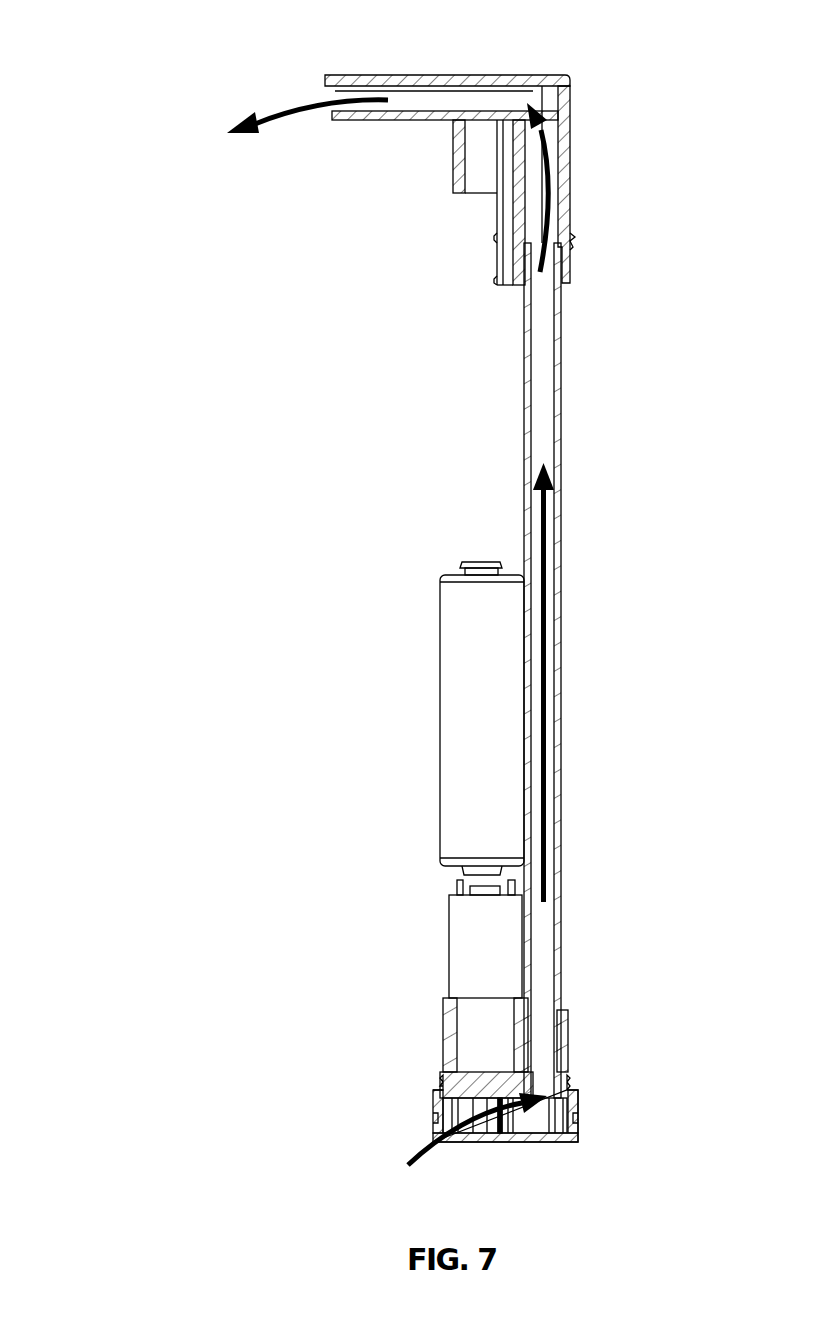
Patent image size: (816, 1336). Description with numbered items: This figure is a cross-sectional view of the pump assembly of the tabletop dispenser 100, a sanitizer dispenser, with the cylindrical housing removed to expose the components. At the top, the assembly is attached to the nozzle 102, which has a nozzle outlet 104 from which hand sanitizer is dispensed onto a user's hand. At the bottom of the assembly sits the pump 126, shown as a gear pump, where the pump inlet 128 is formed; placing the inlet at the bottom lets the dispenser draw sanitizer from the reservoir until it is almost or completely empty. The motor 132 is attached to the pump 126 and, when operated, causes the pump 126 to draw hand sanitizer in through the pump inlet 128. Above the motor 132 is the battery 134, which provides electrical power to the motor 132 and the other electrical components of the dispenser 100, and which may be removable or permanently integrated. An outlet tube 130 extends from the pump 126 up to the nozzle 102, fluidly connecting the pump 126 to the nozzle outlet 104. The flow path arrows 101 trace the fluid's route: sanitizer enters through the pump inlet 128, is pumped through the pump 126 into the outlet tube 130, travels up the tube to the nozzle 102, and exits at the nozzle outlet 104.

The tabletop dispenser 100 is at (104, 58).
The flow path arrows 101 is at (548, 155).
The nozzle 102 is at (475, 80).
The nozzle outlet 104 is at (316, 93).
The pump 126 is at (596, 1083).
The pump inlet 128 is at (414, 1136).
The outlet tube 130 is at (563, 510).
The motor 132 is at (467, 933).
The battery 134 is at (473, 647).